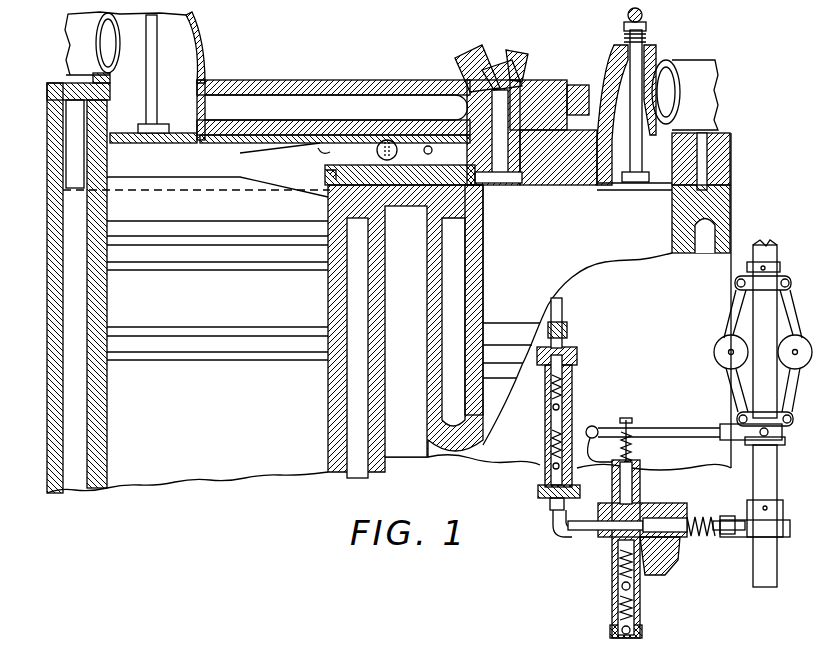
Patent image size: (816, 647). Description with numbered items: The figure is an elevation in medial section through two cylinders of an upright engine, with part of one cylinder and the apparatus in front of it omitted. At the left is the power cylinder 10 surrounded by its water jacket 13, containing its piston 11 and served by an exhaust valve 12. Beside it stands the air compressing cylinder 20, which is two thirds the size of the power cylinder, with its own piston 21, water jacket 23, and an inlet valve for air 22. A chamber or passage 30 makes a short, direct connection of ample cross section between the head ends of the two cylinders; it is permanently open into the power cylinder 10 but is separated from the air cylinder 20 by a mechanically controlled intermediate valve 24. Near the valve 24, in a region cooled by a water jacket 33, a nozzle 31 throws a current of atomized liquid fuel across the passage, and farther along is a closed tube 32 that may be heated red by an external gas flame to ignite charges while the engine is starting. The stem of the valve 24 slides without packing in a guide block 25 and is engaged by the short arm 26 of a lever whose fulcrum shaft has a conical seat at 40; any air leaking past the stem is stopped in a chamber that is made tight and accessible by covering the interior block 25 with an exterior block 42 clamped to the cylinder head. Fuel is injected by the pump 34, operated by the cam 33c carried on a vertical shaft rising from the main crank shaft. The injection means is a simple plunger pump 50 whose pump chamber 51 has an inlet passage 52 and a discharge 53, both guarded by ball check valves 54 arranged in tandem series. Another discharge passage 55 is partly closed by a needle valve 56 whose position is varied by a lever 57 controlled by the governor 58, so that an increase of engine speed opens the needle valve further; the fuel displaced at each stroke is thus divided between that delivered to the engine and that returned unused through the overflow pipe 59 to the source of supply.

The power cylinder 10 is at (93, 285).
The piston 11 is at (117, 303).
The exhaust valve 12 is at (176, 127).
The water jacket 13 is at (72, 368).
The air compressing cylinder 20 is at (486, 297).
The piston 21 is at (512, 338).
The inlet valve for air 22 is at (655, 186).
The water jacket 23 is at (462, 262).
The intermediate valve 24 is at (507, 184).
The guide block 25 is at (487, 90).
The short arm 26 is at (508, 86).
The chamber or passage 30 is at (322, 145).
The nozzle 31 is at (428, 145).
The closed tube 32 is at (382, 140).
The water jacket 33 is at (300, 100).
The cam 33c is at (765, 531).
The pump 34 is at (572, 417).
The conical seat 40 is at (520, 55).
The exterior block 42 is at (541, 80).
The plunger pump 50 is at (640, 512).
The pump chamber 51 is at (614, 553).
The inlet passage 52 is at (628, 638).
The discharge 53 is at (578, 527).
The ball check valves 54 is at (560, 488).
The discharge passage 55 is at (615, 527).
The needle valve 56 is at (640, 461).
The lever 57 is at (670, 432).
The governor 58 is at (724, 360).
The overflow pipe 59 is at (622, 510).